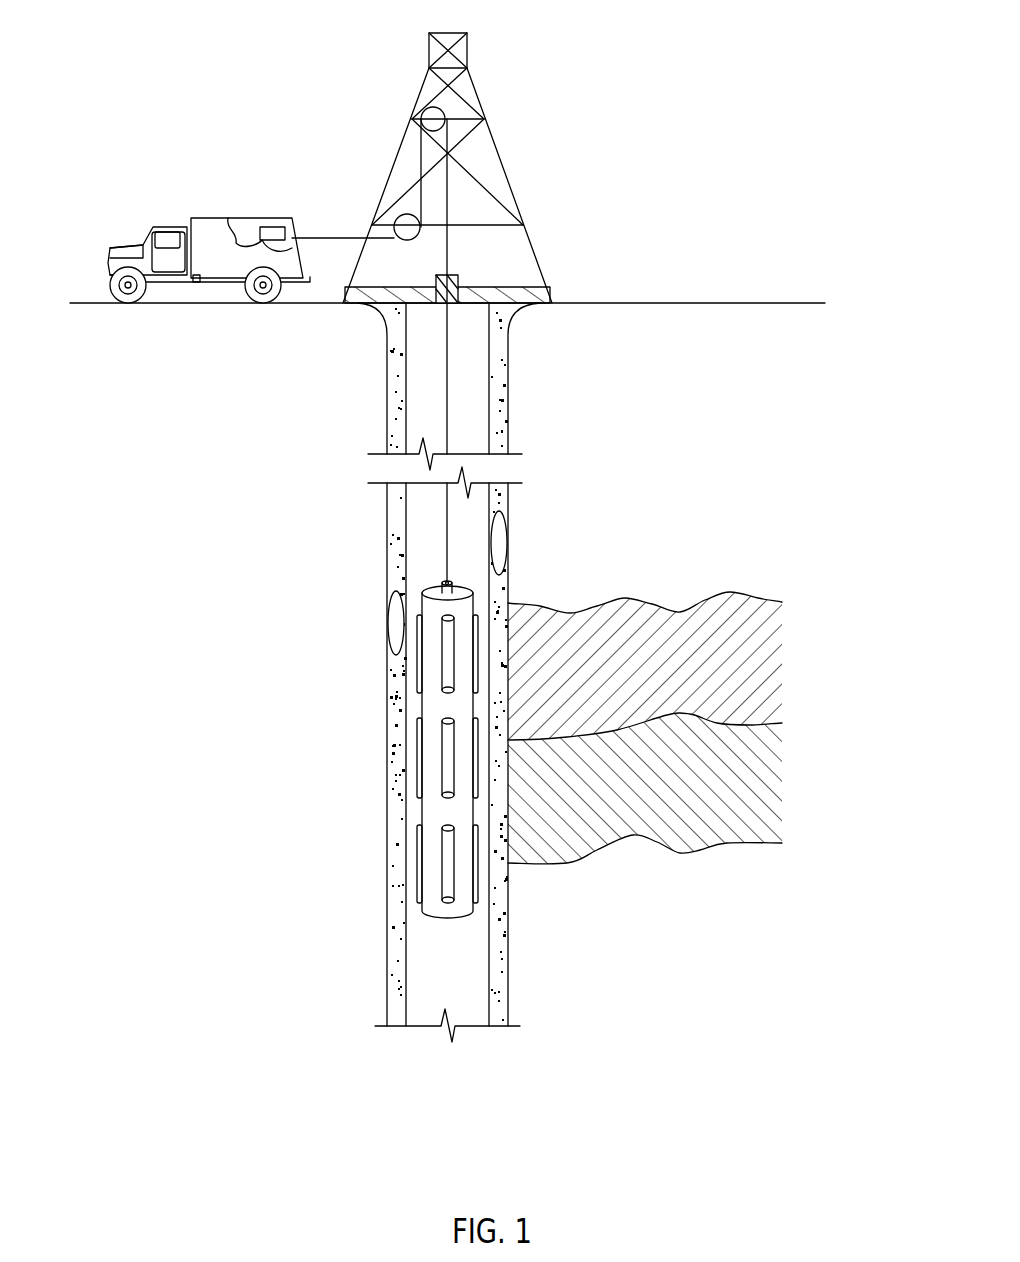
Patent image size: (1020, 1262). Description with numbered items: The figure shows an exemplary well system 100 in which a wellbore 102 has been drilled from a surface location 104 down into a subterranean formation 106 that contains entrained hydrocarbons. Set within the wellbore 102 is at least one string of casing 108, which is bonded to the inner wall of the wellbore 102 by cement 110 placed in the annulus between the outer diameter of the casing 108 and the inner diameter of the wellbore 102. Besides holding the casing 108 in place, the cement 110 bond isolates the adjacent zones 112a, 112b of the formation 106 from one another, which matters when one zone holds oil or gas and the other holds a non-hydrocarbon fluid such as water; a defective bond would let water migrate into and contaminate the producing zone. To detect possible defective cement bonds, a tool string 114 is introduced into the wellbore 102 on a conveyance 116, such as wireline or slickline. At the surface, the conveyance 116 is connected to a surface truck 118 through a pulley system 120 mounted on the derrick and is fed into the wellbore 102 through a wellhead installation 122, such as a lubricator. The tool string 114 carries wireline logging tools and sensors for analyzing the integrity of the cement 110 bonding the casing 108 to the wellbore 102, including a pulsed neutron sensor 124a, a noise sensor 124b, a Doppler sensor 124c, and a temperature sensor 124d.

The well system 100 is at (690, 127).
The wellbore 102 is at (459, 966).
The surface location 104 is at (728, 303).
The subterranean formation 106 is at (698, 694).
The casing 108 is at (490, 1007).
The cement 110 is at (398, 1030).
The zone 112a is at (663, 674).
The zone 112b is at (663, 798).
The tool string 114 is at (405, 582).
The conveyance 116 is at (448, 512).
The surface truck 118 is at (245, 218).
The pulley system 120 is at (427, 113).
The wellhead installation 122 is at (458, 282).
The pulsed neutron sensor 124a is at (417, 680).
The noise sensor 124b is at (417, 786).
The Doppler sensor 124c is at (417, 893).
The temperature sensor 124d is at (480, 622).